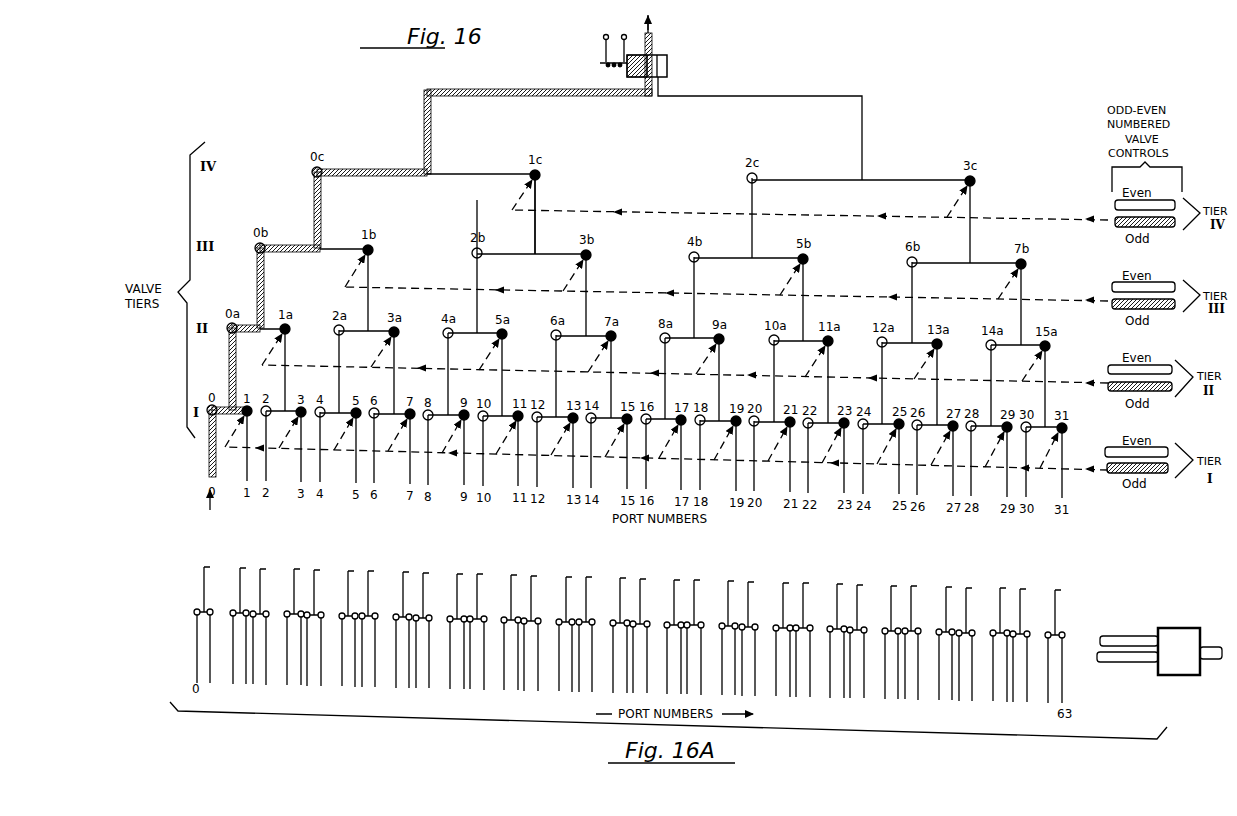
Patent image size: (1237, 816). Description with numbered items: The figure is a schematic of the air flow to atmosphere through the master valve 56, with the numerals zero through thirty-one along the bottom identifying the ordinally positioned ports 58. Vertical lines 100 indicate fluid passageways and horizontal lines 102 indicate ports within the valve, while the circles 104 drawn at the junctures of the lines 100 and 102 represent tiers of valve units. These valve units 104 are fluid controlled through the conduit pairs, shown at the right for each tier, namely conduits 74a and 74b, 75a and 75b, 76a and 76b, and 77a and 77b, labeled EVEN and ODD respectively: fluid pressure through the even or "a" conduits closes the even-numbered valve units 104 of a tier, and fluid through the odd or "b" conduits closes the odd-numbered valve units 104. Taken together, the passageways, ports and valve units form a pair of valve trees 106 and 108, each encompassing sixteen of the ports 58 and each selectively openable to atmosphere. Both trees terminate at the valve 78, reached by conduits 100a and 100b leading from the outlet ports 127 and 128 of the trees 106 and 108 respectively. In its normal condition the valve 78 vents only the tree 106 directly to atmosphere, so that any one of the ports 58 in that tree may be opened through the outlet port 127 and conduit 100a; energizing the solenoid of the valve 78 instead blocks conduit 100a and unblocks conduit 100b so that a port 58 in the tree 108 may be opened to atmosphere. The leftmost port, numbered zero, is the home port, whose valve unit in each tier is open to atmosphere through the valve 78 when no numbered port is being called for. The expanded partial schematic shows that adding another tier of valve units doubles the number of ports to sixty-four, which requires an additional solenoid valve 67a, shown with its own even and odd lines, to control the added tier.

In FIG. 16, the master valve 56 is at (343, 107).
In FIG. 16, the ports 58 is at (195, 492).
In FIG. 16, the valve 78 is at (667, 65).
In FIG. 16, the fluid passageways 100 is at (752, 197).
In FIG. 16, the conduit 100a is at (424, 133).
In FIG. 16, the conduit 100b is at (862, 133).
In FIG. 16, the ports 102 is at (805, 180).
In FIG. 16, the valve units 104 is at (229, 333).
In FIG. 16, the valve tree 106 is at (308, 165).
In FIG. 16, the valve tree 108 is at (938, 148).
In FIG. 16, the outlet port 127 is at (430, 173).
In FIG. 16, the outlet port 128 is at (863, 179).
In FIG. 16, the even conduit 74a is at (1118, 452).
In FIG. 16, the odd conduit 74b is at (1120, 474).
In FIG. 16, the even conduit 75a is at (1118, 369).
In FIG. 16, the odd conduit 75b is at (1118, 391).
In FIG. 16, the even conduit 76a is at (1118, 287).
In FIG. 16, the odd conduit 76b is at (1115, 309).
In FIG. 16, the even conduit 77a is at (1115, 203).
In FIG. 16, the odd conduit 77b is at (1118, 226).
In FIG. 16A, the solenoid valve 67a is at (1193, 661).